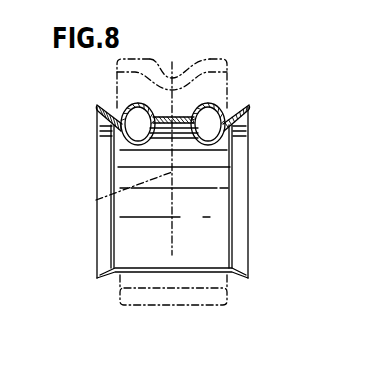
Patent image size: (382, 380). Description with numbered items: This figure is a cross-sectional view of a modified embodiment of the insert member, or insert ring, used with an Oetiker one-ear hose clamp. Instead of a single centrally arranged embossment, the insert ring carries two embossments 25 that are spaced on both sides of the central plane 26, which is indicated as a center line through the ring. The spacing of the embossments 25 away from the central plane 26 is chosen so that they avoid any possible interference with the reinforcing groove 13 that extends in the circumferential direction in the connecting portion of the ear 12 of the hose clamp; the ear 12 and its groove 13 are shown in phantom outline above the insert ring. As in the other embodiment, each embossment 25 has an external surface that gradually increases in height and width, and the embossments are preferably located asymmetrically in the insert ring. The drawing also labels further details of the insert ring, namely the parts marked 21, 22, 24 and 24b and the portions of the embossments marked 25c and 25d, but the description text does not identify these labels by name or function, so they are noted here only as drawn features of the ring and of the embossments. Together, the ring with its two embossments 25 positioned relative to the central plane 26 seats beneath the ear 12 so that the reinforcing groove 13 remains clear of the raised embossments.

The ear 12 is at (226, 40).
The reinforcing groove 13 is at (172, 56).
The base plate 21 is at (133, 233).
The body 22 is at (250, 228).
The side wall 24 is at (95, 107).
The side wall 24b is at (251, 107).
The embossment 25 is at (130, 103).
The clip inclined portion 25c is at (98, 104).
The clip rolled portion 25d is at (142, 105).
The central plane 26 is at (96, 200).